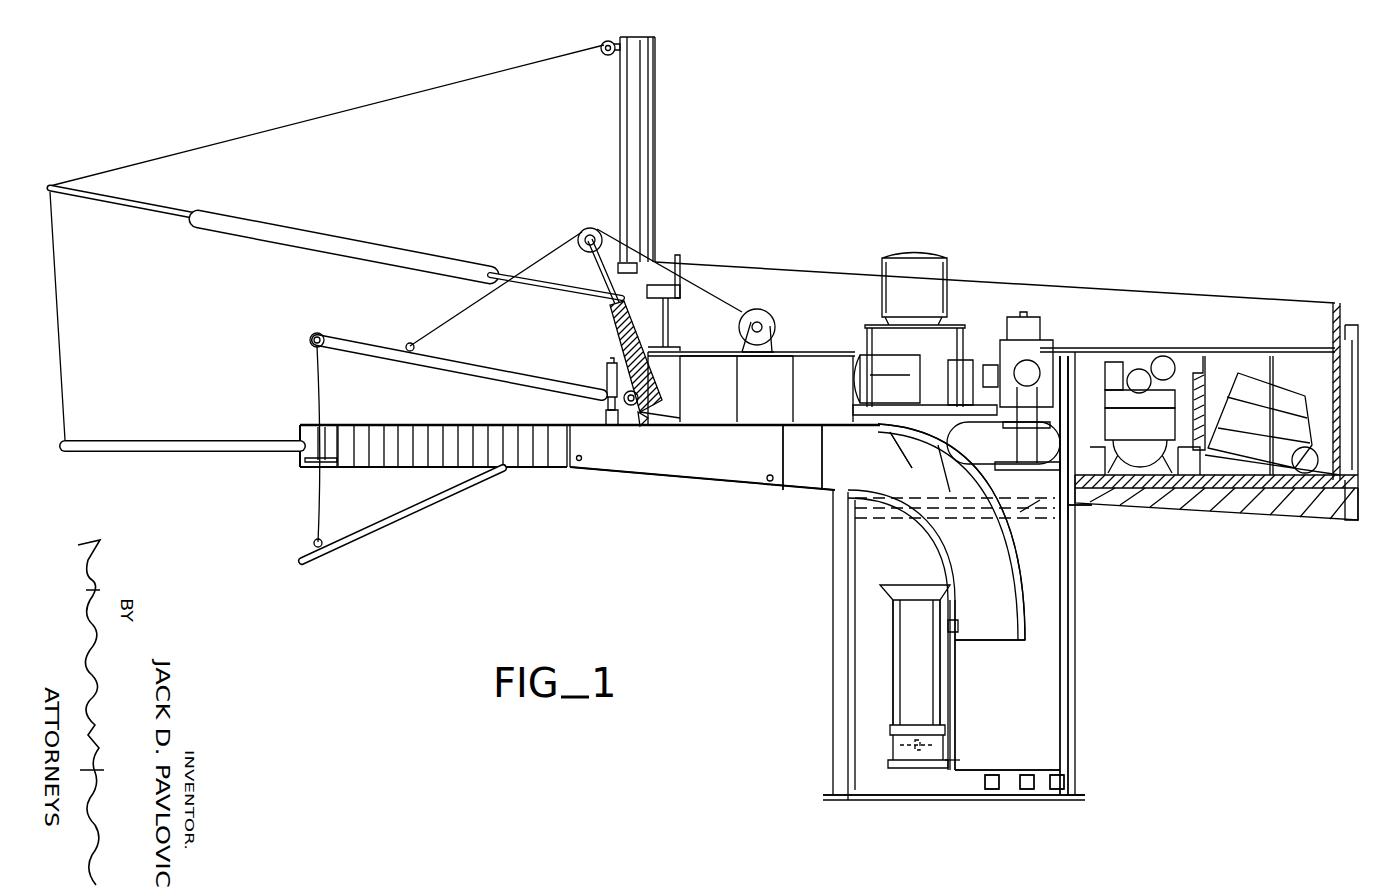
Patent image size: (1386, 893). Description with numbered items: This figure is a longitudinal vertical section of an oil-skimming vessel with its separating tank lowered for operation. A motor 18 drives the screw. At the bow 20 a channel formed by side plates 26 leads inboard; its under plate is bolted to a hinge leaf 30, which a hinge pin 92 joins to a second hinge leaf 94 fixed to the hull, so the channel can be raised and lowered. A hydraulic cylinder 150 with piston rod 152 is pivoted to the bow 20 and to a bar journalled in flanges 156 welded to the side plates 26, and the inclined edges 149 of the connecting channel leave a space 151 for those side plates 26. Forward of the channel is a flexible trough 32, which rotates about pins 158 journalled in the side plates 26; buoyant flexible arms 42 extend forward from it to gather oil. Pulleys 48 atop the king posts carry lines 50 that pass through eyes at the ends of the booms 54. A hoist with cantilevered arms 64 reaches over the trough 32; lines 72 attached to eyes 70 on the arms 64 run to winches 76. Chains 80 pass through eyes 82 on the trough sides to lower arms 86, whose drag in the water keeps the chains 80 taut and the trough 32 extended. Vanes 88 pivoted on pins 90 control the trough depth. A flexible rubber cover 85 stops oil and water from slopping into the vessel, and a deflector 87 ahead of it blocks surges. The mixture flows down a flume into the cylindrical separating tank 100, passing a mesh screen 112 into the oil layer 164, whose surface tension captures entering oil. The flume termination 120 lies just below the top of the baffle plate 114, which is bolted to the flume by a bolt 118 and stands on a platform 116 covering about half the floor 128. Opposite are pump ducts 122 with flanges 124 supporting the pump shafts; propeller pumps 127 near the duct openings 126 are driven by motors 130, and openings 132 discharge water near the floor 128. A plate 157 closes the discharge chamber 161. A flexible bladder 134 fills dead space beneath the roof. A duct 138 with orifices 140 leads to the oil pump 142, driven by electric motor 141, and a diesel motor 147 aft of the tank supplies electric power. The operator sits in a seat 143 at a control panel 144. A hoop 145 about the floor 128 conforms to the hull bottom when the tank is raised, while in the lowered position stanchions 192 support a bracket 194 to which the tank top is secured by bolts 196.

The motor 18 is at (1290, 392).
The bow 20 is at (608, 322).
The side plates 26 is at (677, 459).
The hinge leaf 30 is at (760, 492).
The flexible trough 32 is at (407, 424).
The flexible arms 42 is at (197, 438).
The pulleys 48 is at (605, 53).
The lines 50 is at (352, 100).
The booms 54 is at (455, 262).
The cantilevered arms 64 is at (472, 378).
The eyes 70 is at (407, 343).
The lines 72 is at (483, 300).
The winches 76 is at (770, 316).
The chains 80 is at (316, 387).
The eyes 82 is at (330, 438).
The flexible rubber cover 85 is at (706, 420).
The lower arms 86 is at (345, 555).
The deflector 87 is at (642, 426).
The vanes 88 is at (335, 468).
The pins 90 is at (310, 470).
The hinge pin 92 is at (772, 484).
The hinge leaf 94 is at (800, 492).
The cylindrical separating tank 100 is at (1076, 704).
The mesh screen 112 is at (950, 528).
The baffle plate 114 is at (958, 695).
The platform 116 is at (1042, 768).
The bolt 118 is at (960, 626).
The termination of the flume 120 is at (1012, 641).
The pump ducts 122 is at (892, 652).
The flanges 124 is at (890, 745).
The openings 126 is at (932, 770).
The propeller pumps 127 is at (945, 737).
The floor 128 is at (915, 800).
The motors 130 is at (930, 258).
The openings 132 is at (1058, 792).
The flexible bladder 134 is at (993, 453).
The duct 138 is at (958, 478).
The orifices 140 is at (1022, 515).
The electric motor 141 is at (845, 348).
The pump 142 is at (1050, 335).
The seat 143 is at (684, 258).
The control panel 144 is at (590, 228).
The hoop 145 is at (1085, 792).
The diesel motor 147 is at (1175, 352).
The edges 149 is at (783, 420).
The hydraulic cylinder 150 is at (604, 370).
The space 151 is at (780, 452).
The piston rod 152 is at (604, 399).
The flanges 156 is at (612, 426).
The plate 157 is at (955, 760).
The pins 158 is at (582, 470).
The discharge chamber 161 is at (1008, 795).
The layer of oil 164 is at (1072, 515).
The stanchions 192 is at (1092, 432).
The bracket 194 is at (1095, 505).
The bolts 196 is at (1098, 403).